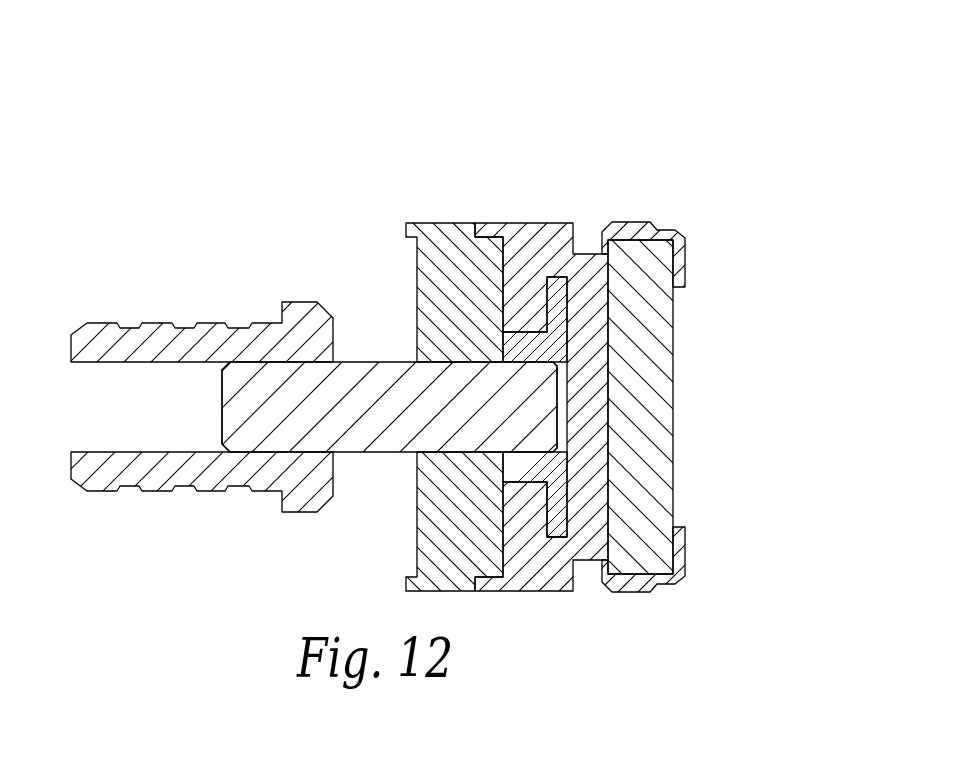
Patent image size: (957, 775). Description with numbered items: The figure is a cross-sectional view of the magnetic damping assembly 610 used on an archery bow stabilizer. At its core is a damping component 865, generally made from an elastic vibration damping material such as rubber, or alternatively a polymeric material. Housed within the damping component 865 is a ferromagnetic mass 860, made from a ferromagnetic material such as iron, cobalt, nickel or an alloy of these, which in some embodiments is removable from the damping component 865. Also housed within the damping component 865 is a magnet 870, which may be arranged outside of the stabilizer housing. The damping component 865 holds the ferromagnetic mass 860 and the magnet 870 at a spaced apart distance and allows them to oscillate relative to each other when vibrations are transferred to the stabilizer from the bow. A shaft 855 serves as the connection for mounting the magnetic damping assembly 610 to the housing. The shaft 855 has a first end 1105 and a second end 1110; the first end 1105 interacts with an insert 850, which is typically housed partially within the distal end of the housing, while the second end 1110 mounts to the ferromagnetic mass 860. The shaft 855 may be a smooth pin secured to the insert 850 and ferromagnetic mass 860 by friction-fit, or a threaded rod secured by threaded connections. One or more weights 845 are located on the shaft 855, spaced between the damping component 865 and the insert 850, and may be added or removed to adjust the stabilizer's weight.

The magnetic damping assembly 610 is at (680, 138).
The weights 845 is at (437, 222).
The insert 850 is at (107, 323).
The shaft 855 is at (362, 362).
The ferromagnetic mass 860 is at (575, 570).
The damping component 865 is at (558, 222).
The magnet 870 is at (673, 400).
The first end 1105 is at (250, 410).
The second end 1110 is at (537, 423).